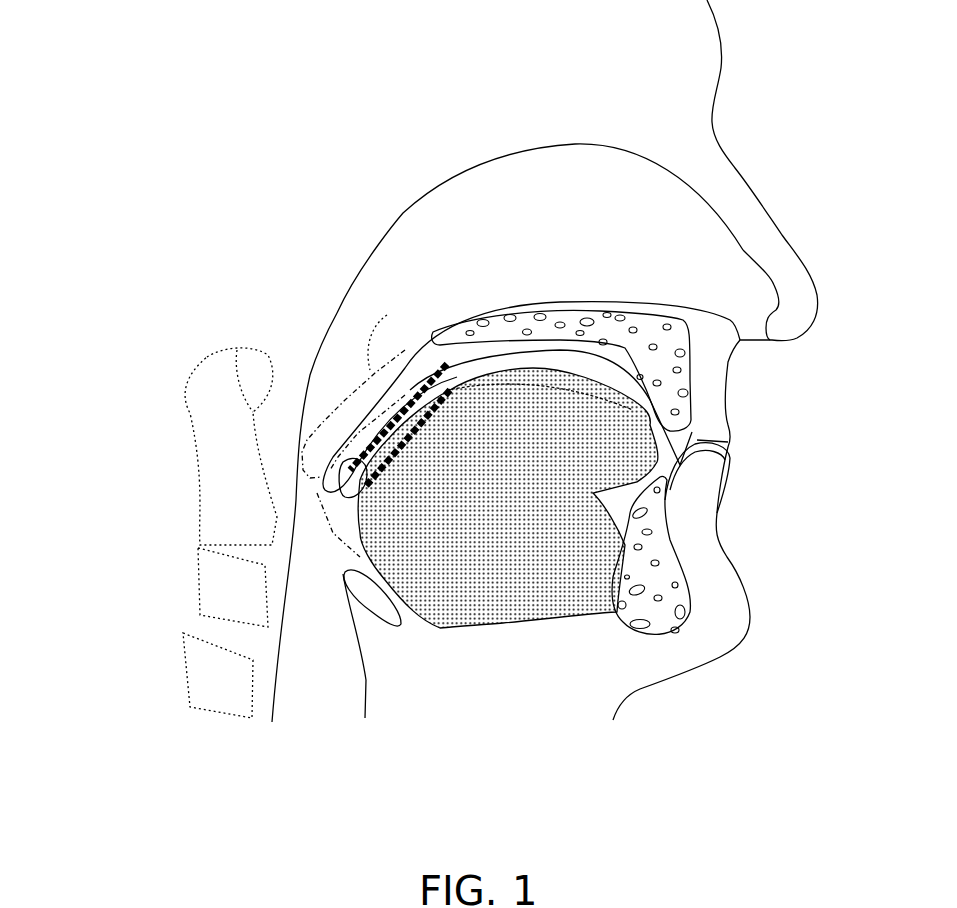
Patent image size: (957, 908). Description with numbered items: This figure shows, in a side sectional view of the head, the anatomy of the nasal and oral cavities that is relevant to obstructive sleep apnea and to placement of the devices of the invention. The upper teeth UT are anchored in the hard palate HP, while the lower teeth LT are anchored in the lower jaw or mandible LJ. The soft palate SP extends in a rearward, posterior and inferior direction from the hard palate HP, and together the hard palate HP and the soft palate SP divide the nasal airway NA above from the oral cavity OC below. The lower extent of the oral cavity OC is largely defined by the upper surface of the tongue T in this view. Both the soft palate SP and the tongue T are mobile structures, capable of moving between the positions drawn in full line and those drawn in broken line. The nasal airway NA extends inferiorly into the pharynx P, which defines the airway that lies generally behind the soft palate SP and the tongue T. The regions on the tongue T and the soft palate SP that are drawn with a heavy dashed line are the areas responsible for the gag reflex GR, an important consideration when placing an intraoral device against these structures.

The pharynx P is at (337, 388).
The nasal airway NA is at (557, 243).
The oral cavity OC is at (600, 380).
The soft palate SP is at (420, 358).
The hard palate HP is at (672, 383).
The upper teeth UT is at (683, 433).
The lower teeth LT is at (672, 475).
The lower jaw LJ is at (655, 527).
The gag reflex GR is at (372, 497).
The tongue T is at (442, 597).